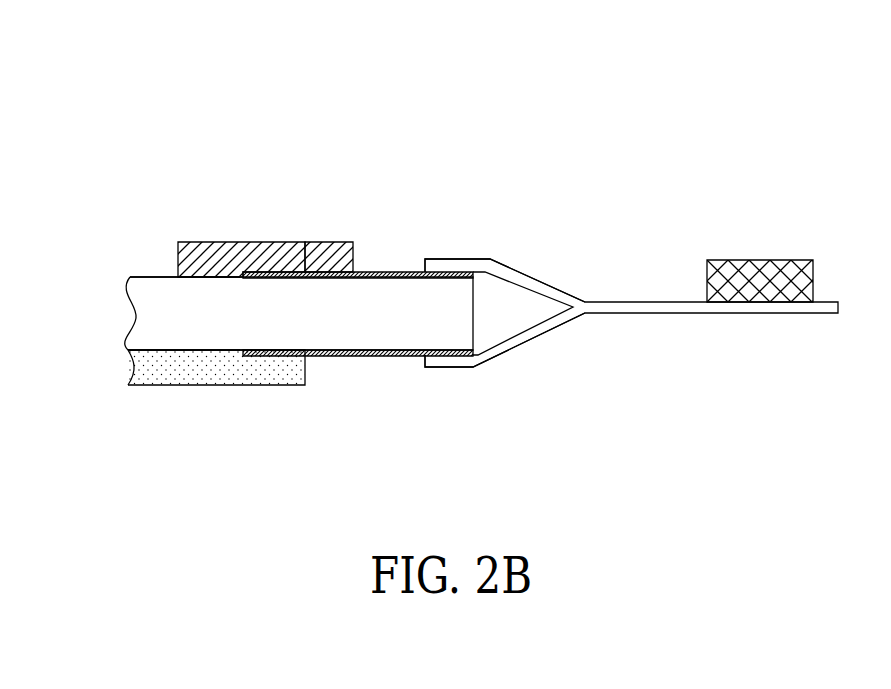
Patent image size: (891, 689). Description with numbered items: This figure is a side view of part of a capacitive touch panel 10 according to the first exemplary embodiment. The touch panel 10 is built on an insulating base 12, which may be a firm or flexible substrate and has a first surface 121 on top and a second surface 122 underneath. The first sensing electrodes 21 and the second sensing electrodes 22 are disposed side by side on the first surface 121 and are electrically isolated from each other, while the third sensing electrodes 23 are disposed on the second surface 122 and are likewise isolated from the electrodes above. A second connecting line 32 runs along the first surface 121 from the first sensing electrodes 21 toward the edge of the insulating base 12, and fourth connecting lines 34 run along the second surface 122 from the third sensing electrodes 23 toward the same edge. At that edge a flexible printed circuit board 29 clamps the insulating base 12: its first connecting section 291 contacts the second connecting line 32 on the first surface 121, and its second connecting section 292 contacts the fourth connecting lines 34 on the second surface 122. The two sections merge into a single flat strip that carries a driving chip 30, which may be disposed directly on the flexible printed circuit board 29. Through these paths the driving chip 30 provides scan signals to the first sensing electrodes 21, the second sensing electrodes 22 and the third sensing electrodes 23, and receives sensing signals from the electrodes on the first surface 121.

The touch panel 10 is at (657, 118).
The insulating base 12 is at (142, 327).
The first surface 121 is at (150, 277).
The second surface 122 is at (152, 352).
The first sensing electrodes 21 is at (247, 242).
The second sensing electrodes 22 is at (325, 248).
The third sensing electrodes 23 is at (226, 374).
The flexible printed circuit board 29 is at (631, 318).
The first connecting section 291 is at (458, 267).
The second connecting section 292 is at (455, 368).
The driving chip 30 is at (762, 260).
The second connecting line 32 is at (375, 272).
The fourth connecting lines 34 is at (375, 357).